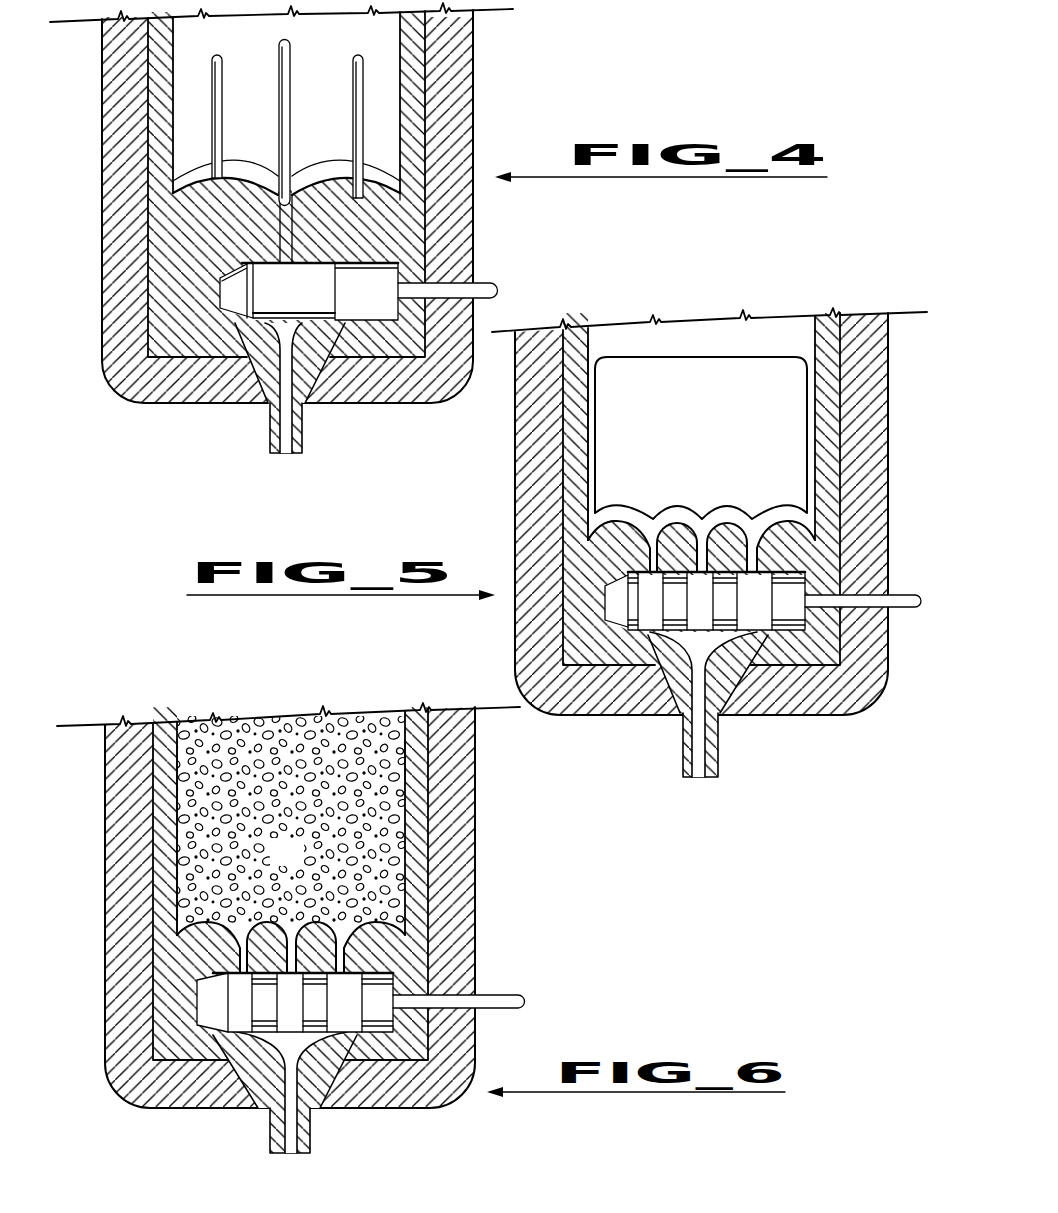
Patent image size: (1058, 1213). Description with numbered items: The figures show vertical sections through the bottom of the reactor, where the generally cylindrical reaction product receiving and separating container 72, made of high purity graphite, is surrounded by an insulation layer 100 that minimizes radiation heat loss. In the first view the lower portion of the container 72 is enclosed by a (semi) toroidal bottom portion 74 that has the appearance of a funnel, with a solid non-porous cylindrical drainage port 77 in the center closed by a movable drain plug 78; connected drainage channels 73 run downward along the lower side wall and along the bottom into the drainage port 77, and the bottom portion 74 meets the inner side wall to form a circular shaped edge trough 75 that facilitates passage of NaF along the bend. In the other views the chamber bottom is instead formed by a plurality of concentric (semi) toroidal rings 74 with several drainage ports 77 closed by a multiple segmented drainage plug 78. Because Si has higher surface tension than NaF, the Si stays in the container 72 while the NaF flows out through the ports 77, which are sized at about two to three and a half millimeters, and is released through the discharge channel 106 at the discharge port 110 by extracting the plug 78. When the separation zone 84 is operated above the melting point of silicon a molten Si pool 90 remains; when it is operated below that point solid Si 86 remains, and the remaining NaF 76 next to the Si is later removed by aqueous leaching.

In FIG. 4, the reaction product receiving and separating container 72 is at (410, 78).
In FIG. 5, the reaction product receiving and separating container 72 is at (570, 458).
In FIG. 6, the reaction product receiving and separating container 72 is at (415, 835).
In FIG. 4, the drainage channels 73 is at (212, 77).
In FIG. 4, the bottom portion 74 is at (200, 182).
In FIG. 5, the bottom portion 74 is at (660, 527).
In FIG. 6, the bottom portion 74 is at (245, 930).
In FIG. 4, the circular shaped edge trough 75 is at (395, 205).
In FIG. 5, the circular shaped edge trough 75 is at (600, 520).
In FIG. 5, the remaining NaF 76 is at (588, 415).
In FIG. 6, the remaining NaF 76 is at (215, 912).
In FIG. 4, the drainage port 77 is at (300, 170).
In FIG. 5, the drainage port 77 is at (760, 553).
In FIG. 6, the drainage port 77 is at (355, 950).
In FIG. 4, the movable drain plug 78 is at (266, 284).
In FIG. 5, the movable drain plug 78 is at (648, 605).
In FIG. 6, the movable drain plug 78 is at (238, 1003).
In FIG. 6, the separation zone 84 is at (300, 863).
In FIG. 6, the solid Si 86 is at (400, 757).
In FIG. 5, the molten Si 90 is at (702, 446).
In FIG. 4, the insulation layer 100 is at (120, 140).
In FIG. 5, the insulation layer 100 is at (873, 458).
In FIG. 6, the insulation layer 100 is at (120, 828).
In FIG. 4, the discharge channel 106 is at (282, 430).
In FIG. 5, the discharge channel 106 is at (690, 770).
In FIG. 6, the discharge channel 106 is at (283, 1148).
In FIG. 4, the discharge port 110 is at (293, 428).
In FIG. 5, the discharge port 110 is at (718, 755).
In FIG. 6, the discharge port 110 is at (305, 1138).